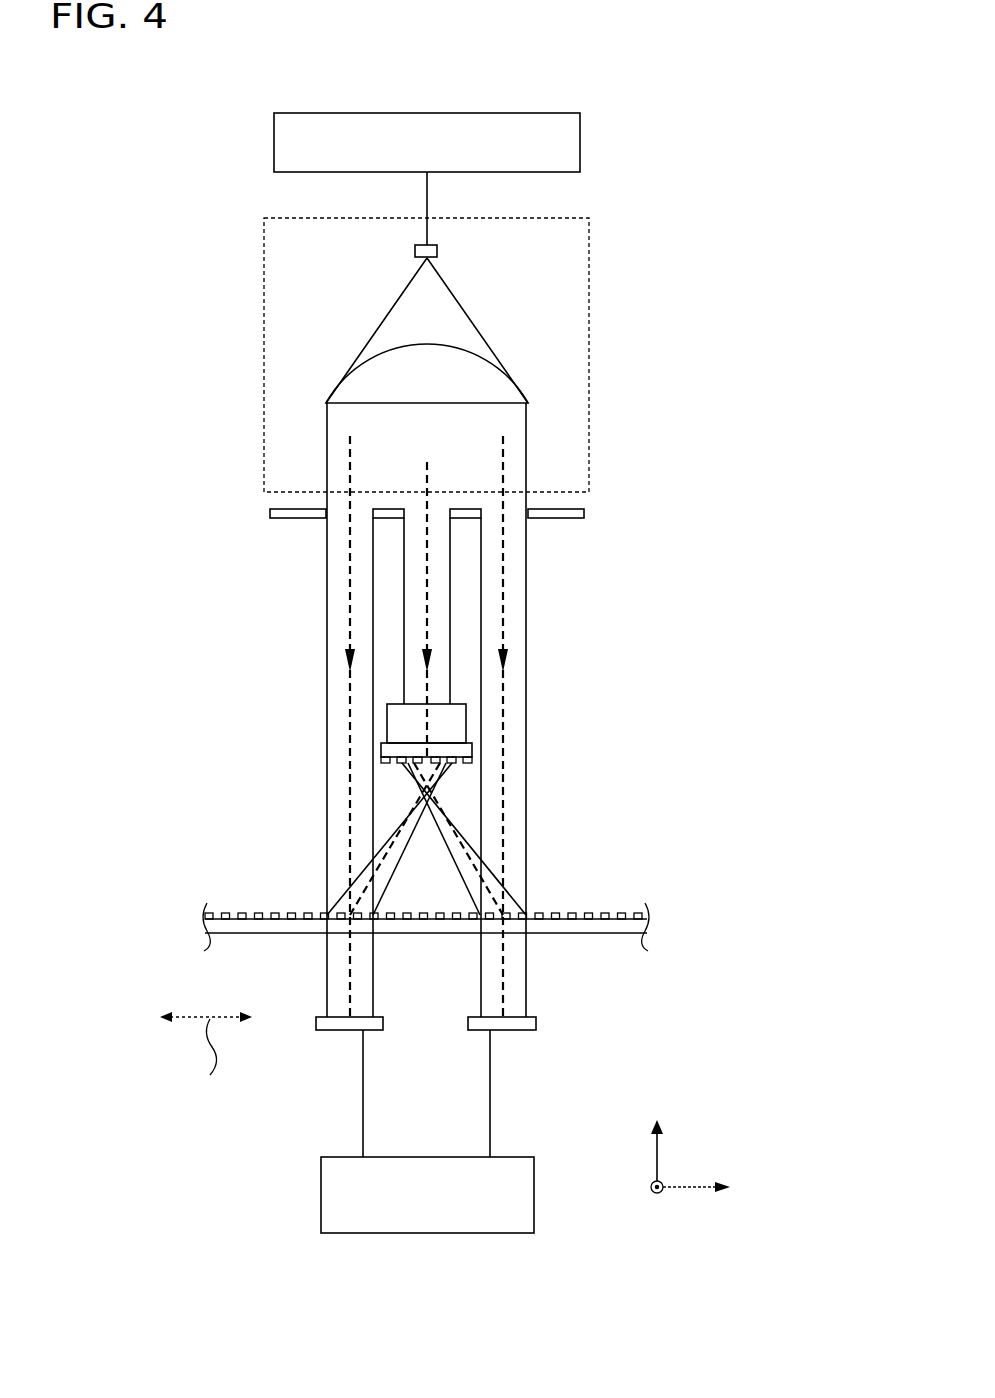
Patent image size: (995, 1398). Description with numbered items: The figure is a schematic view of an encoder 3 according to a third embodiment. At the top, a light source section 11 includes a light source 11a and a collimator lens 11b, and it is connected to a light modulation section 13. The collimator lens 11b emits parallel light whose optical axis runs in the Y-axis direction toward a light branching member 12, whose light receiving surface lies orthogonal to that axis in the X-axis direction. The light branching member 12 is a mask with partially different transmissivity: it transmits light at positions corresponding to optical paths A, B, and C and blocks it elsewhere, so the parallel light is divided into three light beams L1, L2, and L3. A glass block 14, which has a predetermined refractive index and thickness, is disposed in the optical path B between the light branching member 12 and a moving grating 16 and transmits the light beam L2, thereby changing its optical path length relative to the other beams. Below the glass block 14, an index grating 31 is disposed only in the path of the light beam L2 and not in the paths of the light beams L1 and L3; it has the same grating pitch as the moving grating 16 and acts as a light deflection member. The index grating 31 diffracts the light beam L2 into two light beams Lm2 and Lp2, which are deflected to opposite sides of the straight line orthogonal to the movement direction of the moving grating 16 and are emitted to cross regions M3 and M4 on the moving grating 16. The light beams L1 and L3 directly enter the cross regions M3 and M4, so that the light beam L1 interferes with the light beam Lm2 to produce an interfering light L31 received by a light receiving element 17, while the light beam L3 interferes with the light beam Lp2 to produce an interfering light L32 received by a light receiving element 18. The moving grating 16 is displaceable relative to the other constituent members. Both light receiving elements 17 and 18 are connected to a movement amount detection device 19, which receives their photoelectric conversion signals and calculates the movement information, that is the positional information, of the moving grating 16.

The encoder 3 is at (177, 212).
The light source section 11 is at (590, 222).
The light source 11a is at (438, 251).
The collimator lens 11b is at (478, 408).
The light branching member 12 is at (585, 513).
The light modulation section 13 is at (582, 133).
The glass block 14 is at (387, 713).
The moving grating 16 is at (628, 923).
The light receiving element 17 is at (337, 1031).
The light receiving element 18 is at (515, 1031).
The movement amount detection device 19 is at (430, 1234).
The index grating 31 is at (472, 750).
The light beam L1 is at (292, 710).
The light beam L2 is at (443, 609).
The light beam L3 is at (562, 710).
The optical path A is at (350, 688).
The optical path B is at (427, 544).
The optical path C is at (505, 689).
The light beam Lm2 is at (400, 786).
The light beam Lp2 is at (453, 784).
The cross region M3 is at (346, 917).
The cross region M4 is at (511, 917).
The interfering light L31 is at (334, 986).
The interfering light L32 is at (517, 987).